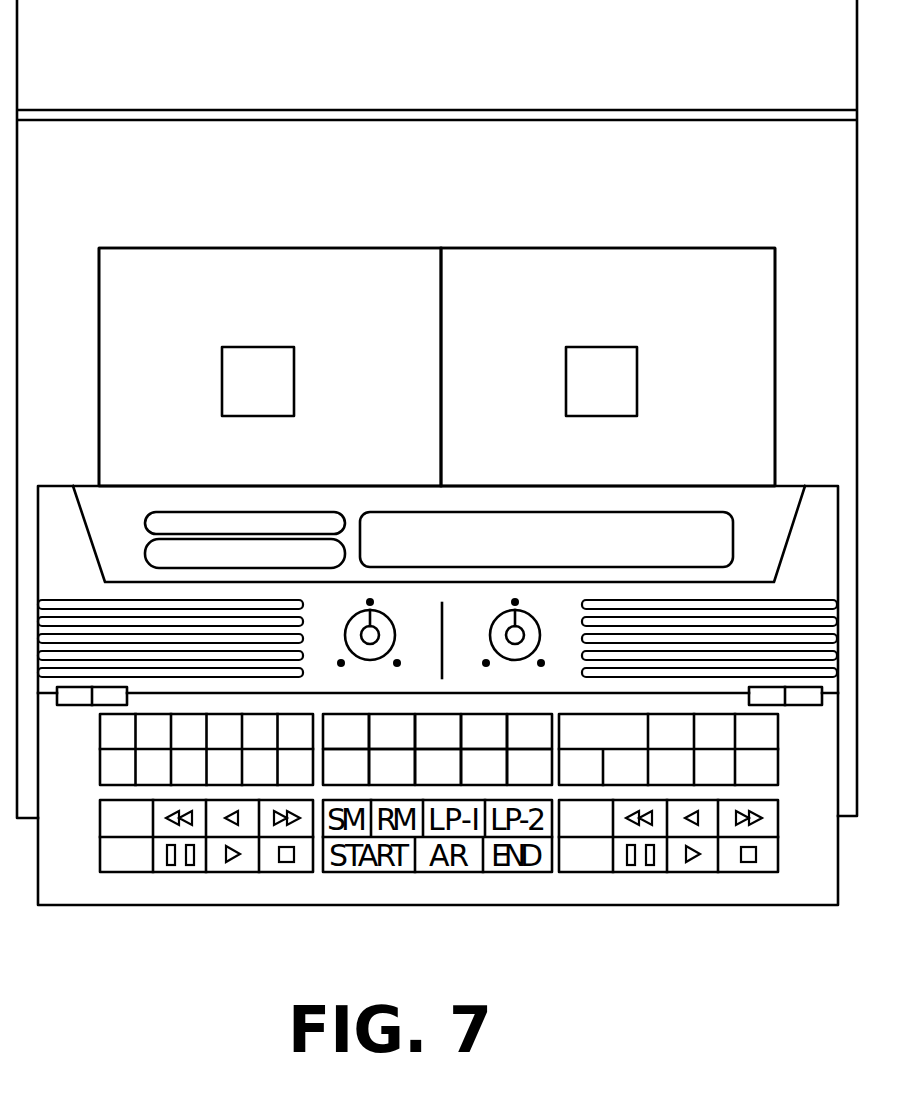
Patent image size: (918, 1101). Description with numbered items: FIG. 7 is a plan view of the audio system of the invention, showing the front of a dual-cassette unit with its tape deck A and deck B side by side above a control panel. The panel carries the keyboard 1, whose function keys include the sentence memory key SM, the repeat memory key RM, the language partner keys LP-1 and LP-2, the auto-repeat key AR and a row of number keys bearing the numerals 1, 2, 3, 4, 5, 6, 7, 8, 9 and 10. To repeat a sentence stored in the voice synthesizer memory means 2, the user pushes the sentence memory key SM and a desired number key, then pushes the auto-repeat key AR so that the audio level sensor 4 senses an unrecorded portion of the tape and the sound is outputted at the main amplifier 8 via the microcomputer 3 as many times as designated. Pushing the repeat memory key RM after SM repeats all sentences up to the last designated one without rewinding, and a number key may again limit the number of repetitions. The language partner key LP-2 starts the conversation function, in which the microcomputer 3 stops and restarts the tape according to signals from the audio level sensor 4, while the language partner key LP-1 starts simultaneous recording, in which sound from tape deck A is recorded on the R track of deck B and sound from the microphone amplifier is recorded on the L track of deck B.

The keyboard 1 is at (346, 733).
The voice synthesizer memory means 2 is at (392, 733).
The microcomputer 3 is at (438, 733).
The audio level sensor 4 is at (484, 733).
The numbered selection key 5 is at (529, 733).
The numbered selection key 6 is at (346, 768).
The numbered selection key 7 is at (392, 768).
The main amplifier 8 is at (438, 768).
The numbered selection key 9 is at (484, 768).
The numbered selection key 10 is at (529, 768).
The tape deck A is at (270, 367).
The deck B is at (608, 367).